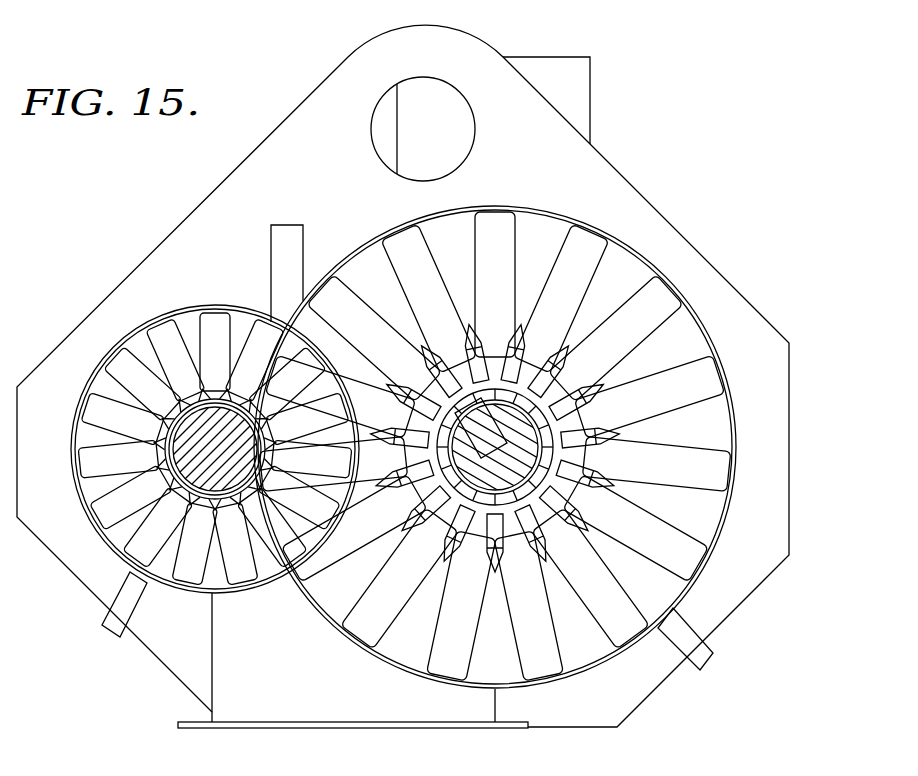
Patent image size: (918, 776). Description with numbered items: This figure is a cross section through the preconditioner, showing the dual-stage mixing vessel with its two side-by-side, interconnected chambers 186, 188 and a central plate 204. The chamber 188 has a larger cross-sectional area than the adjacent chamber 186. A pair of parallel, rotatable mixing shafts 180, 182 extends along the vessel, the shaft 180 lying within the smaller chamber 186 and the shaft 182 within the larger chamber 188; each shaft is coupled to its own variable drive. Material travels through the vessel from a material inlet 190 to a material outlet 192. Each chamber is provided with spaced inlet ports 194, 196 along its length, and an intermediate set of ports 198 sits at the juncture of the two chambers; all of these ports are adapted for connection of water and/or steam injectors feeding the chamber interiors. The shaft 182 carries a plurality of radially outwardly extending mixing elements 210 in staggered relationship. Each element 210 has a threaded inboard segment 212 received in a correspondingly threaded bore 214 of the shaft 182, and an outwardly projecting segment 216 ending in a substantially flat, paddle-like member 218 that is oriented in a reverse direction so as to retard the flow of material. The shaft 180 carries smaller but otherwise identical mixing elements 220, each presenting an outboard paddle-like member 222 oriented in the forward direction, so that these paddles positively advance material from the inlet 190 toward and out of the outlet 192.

The mixing shaft 180 is at (72, 432).
The mixing shaft 182 is at (618, 512).
The chamber 186 is at (135, 328).
The chamber 188 is at (695, 319).
The material inlet 190 is at (576, 82).
The material outlet 192 is at (302, 702).
The inlet ports 194 is at (108, 620).
The inlet ports 196 is at (706, 655).
The intermediate set of ports 198 is at (287, 232).
The central plate 204 is at (367, 63).
The mixing elements 210 is at (508, 422).
The threaded inboard segment 212 is at (360, 465).
The threaded bore 214 is at (622, 468).
The outwardly projecting segment 216 is at (645, 392).
The paddle-like member 218 is at (486, 232).
The mixing elements 220 is at (190, 421).
The paddle-like member 222 is at (117, 366).